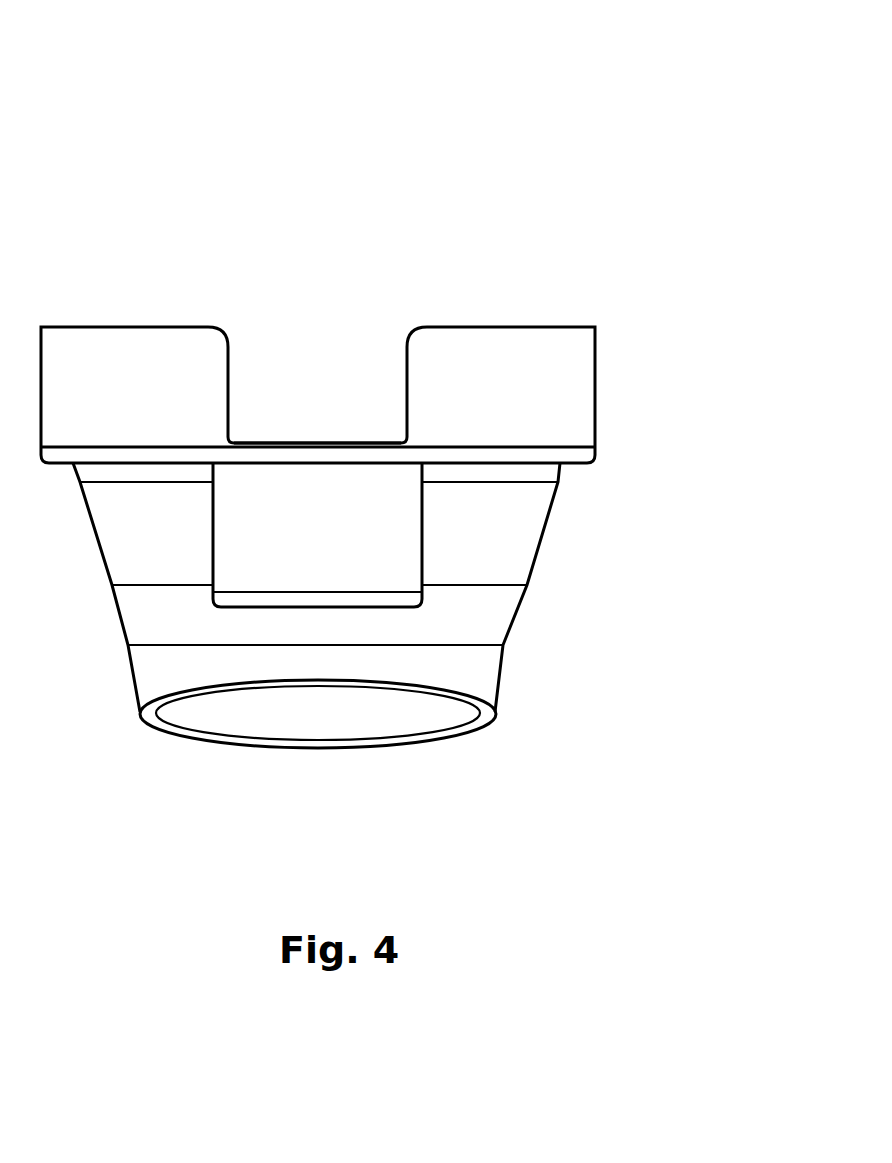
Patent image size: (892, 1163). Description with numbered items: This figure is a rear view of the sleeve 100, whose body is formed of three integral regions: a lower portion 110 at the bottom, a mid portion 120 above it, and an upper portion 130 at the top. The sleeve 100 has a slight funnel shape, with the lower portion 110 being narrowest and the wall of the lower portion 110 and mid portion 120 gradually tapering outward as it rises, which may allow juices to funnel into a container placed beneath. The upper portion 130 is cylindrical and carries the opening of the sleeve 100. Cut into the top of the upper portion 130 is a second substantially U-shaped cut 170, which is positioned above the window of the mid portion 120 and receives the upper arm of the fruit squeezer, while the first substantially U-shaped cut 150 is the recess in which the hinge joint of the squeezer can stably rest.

The sleeve 100 is at (513, 71).
The lower portion 110 is at (512, 651).
The mid portion 120 is at (560, 516).
The upper portion 130 is at (598, 404).
The first substantially U-shaped cut 150 is at (249, 344).
The second substantially U-shaped cut 170 is at (308, 488).